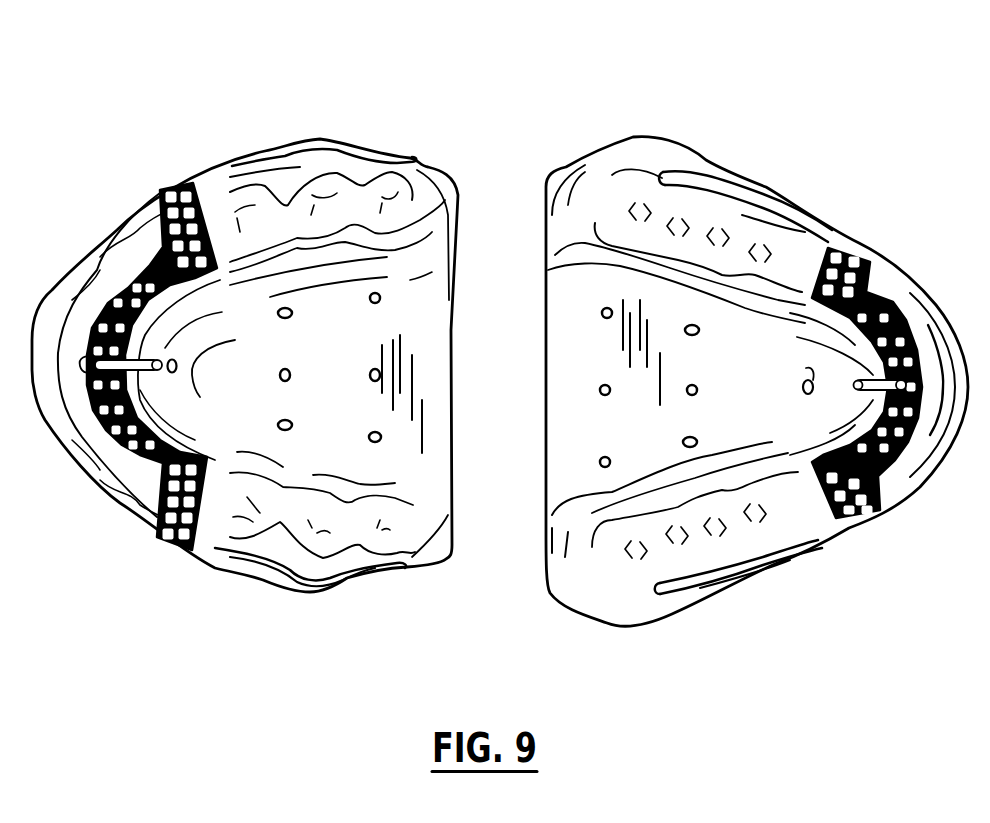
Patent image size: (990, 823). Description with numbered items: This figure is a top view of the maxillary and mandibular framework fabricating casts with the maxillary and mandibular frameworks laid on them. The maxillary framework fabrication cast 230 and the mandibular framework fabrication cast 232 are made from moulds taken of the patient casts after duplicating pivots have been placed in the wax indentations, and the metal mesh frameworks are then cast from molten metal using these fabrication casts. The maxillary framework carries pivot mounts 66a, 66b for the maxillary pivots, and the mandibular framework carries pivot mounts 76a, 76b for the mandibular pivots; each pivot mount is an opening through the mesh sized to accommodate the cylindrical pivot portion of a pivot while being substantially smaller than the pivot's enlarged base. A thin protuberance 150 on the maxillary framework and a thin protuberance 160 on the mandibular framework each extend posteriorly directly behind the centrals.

The maxillary framework fabrication cast 230 is at (410, 122).
The mandibular framework fabrication cast 232 is at (612, 136).
The pivot mount 66a is at (287, 598).
The pivot mount 66b is at (328, 136).
The pivot mount 76a is at (868, 527).
The pivot mount 76b is at (853, 230).
The thin protuberance 150 is at (193, 343).
The thin protuberance 160 is at (810, 375).